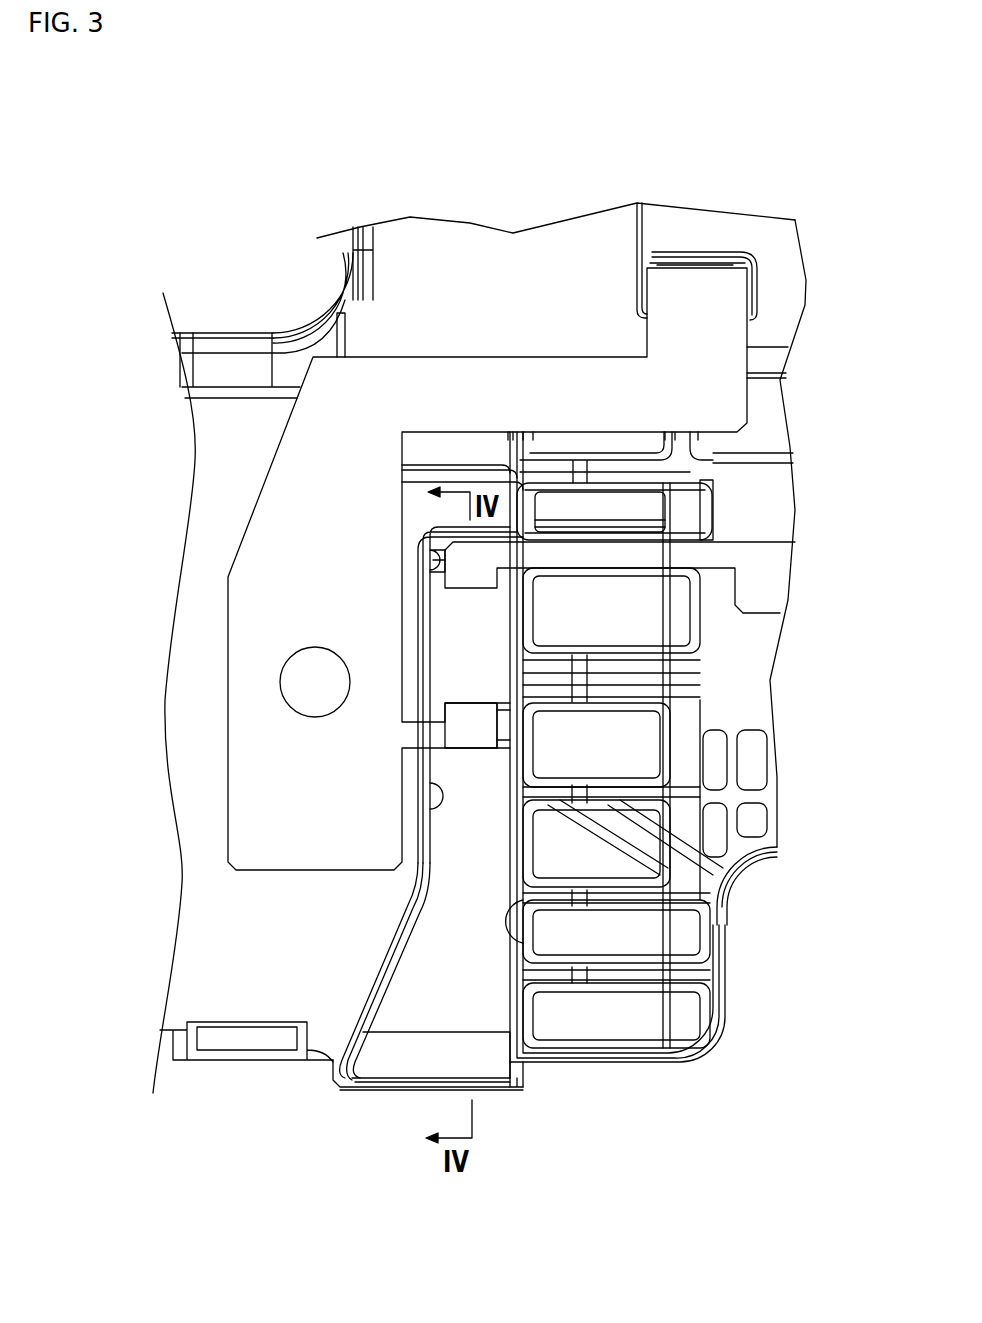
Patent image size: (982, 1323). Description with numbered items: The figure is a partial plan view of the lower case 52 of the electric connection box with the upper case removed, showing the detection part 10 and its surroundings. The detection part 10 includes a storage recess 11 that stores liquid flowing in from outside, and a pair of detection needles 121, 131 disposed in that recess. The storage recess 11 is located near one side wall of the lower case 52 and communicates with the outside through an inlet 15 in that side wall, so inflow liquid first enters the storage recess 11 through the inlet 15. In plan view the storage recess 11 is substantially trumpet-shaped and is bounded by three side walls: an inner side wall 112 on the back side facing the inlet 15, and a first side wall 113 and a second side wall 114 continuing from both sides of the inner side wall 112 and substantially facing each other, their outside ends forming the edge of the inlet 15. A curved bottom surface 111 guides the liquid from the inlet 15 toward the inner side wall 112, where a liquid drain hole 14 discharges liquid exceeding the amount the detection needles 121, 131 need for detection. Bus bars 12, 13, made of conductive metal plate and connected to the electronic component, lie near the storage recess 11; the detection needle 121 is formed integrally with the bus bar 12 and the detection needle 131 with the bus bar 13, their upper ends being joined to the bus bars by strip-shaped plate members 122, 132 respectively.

The detection part 10 is at (352, 1109).
The storage recess 11 is at (416, 1022).
The bus bar 12 is at (446, 378).
The bus bar 13 is at (767, 583).
The liquid drain hole 14 is at (433, 573).
The inlet 15 is at (487, 1093).
The lower case 52 is at (340, 297).
The bottom surface 111 is at (470, 993).
The inner side wall 112 is at (433, 527).
The first side wall 113 is at (437, 795).
The second side wall 114 is at (495, 905).
The detection needle 121 is at (488, 705).
The strip-shaped plate member 122 is at (480, 730).
The detection needle 131 is at (467, 585).
The strip-shaped plate member 132 is at (595, 545).